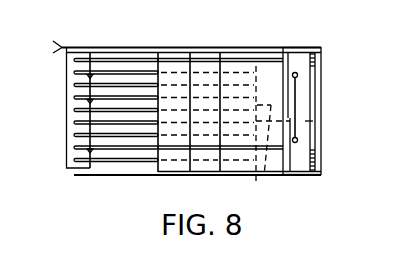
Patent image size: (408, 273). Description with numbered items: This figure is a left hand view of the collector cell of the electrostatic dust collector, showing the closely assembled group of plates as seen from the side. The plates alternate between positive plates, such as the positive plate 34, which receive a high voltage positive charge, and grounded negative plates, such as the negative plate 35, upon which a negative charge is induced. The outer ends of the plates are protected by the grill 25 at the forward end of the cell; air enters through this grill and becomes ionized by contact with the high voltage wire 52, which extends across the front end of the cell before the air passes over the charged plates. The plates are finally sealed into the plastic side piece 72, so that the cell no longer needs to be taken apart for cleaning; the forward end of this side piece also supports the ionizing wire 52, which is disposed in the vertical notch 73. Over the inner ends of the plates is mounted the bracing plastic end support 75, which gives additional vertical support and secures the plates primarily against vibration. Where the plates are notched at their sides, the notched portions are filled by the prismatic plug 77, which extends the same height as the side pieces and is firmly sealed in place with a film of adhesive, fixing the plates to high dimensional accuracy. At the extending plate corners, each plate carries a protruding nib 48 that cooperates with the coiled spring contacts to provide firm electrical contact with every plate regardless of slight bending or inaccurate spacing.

The grill 25 is at (318, 104).
The positive plate 34 is at (248, 56).
The negative plate 35 is at (250, 172).
The protruding nib 48 is at (86, 152).
The high voltage wire 52 is at (290, 82).
The plastic side piece 72 is at (263, 153).
The vertical notch 73 is at (287, 42).
The bracing plastic end support 75 is at (58, 83).
The prismatic plug 77 is at (196, 57).